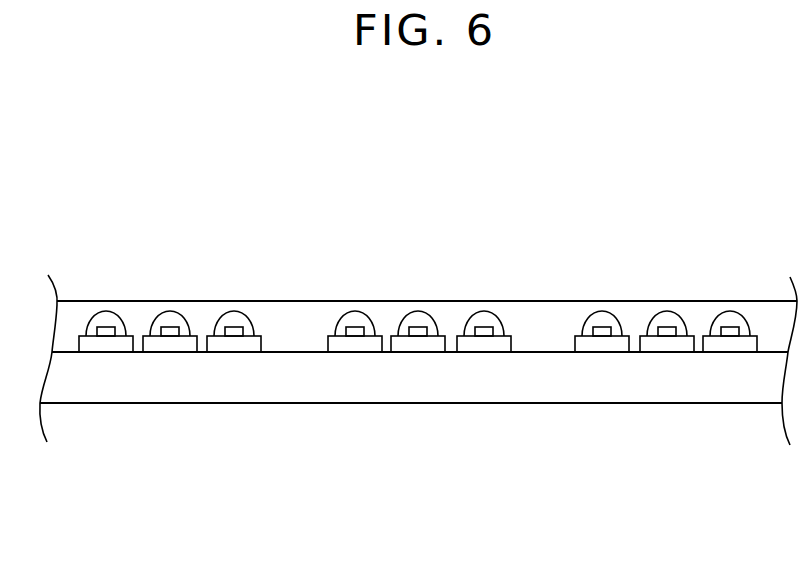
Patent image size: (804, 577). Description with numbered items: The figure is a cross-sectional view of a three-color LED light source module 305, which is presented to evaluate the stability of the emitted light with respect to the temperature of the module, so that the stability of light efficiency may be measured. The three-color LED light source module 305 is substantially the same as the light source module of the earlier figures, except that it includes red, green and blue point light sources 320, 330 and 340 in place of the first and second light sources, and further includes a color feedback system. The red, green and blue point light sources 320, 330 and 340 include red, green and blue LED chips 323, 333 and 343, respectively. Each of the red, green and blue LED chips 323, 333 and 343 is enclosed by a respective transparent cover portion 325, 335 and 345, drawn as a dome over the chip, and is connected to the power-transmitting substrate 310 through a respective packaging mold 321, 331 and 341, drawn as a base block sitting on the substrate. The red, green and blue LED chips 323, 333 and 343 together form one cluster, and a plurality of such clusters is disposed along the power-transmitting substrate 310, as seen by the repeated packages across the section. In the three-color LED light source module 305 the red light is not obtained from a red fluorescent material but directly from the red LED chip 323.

The three-color LED light source module 305 is at (185, 290).
The power-transmitting substrate 310 is at (585, 383).
The red point light source 320 is at (368, 254).
The packaging mold 321 is at (332, 342).
The red LED chip 323 is at (358, 328).
The transparent cover portion 325 is at (371, 318).
The green point light source 330 is at (445, 254).
The packaging mold 331 is at (398, 342).
The green LED chip 333 is at (410, 328).
The transparent cover portion 335 is at (423, 319).
The blue point light source 340 is at (473, 254).
The packaging mold 341 is at (466, 342).
The blue LED chip 343 is at (487, 328).
The transparent cover portion 345 is at (495, 319).